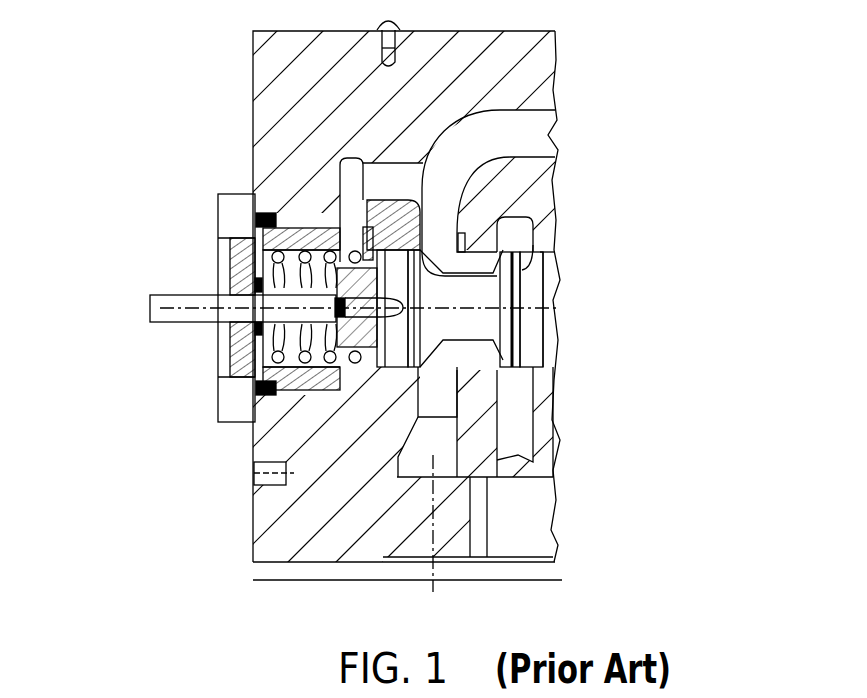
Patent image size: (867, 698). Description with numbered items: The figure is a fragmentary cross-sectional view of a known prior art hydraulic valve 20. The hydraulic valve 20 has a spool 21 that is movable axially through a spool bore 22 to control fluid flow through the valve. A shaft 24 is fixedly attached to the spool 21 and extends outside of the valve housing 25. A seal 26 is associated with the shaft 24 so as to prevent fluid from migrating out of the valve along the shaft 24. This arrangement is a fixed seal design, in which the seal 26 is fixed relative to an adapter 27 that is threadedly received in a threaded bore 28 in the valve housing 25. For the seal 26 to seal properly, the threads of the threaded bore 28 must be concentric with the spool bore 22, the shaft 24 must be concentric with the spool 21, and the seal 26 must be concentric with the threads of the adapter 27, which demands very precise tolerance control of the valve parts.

The hydraulic valve 20 is at (583, 70).
The spool 21 is at (557, 280).
The spool bore 22 is at (480, 362).
The shaft 24 is at (148, 312).
The valve housing 25 is at (253, 530).
The seal 26 is at (222, 332).
The adapter 27 is at (218, 222).
The threaded bore 28 is at (262, 392).